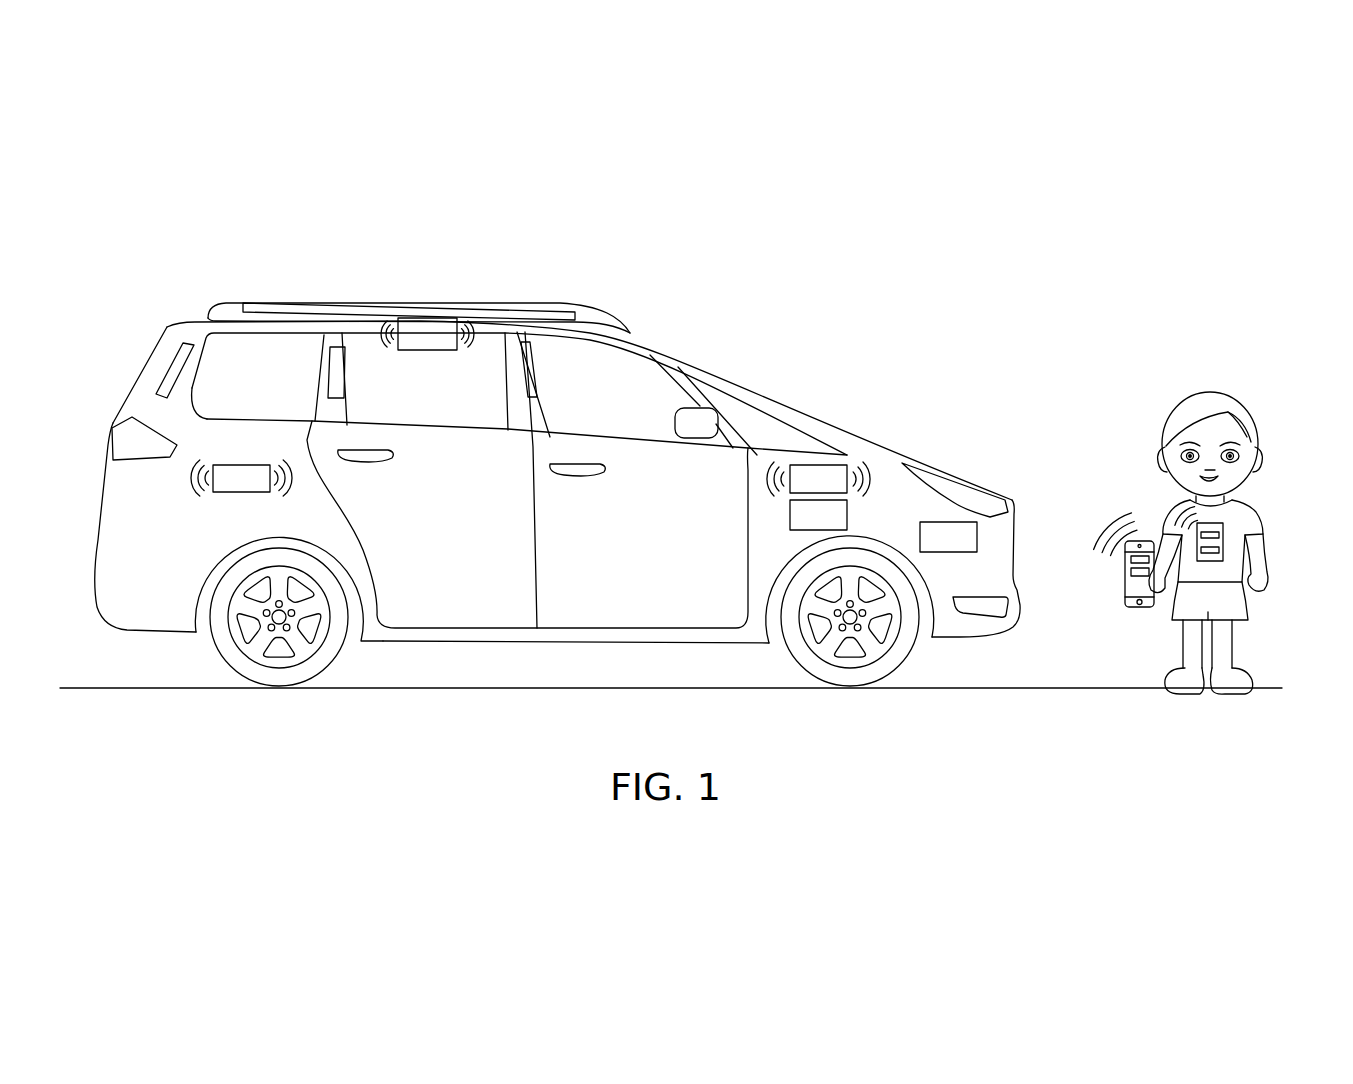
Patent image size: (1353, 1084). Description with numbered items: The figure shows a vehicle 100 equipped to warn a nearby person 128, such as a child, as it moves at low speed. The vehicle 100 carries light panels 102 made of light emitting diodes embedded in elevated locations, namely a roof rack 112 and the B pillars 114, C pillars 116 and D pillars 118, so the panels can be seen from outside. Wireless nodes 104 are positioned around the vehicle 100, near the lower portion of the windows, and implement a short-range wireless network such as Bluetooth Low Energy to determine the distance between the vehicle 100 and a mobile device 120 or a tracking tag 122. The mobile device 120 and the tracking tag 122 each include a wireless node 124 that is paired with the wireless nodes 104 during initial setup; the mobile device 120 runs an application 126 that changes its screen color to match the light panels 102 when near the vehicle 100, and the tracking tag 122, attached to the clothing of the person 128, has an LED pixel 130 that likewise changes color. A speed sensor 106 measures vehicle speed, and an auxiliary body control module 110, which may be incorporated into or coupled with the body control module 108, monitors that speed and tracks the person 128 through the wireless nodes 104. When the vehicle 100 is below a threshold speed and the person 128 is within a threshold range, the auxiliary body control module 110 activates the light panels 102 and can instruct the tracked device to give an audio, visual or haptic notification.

The vehicle 100 is at (918, 454).
The light panels 102 is at (517, 303).
The wireless nodes 104 is at (243, 493).
The speed sensor 106 is at (790, 513).
The body control module 108 is at (1013, 531).
The auxiliary body control module 110 is at (425, 318).
The roof rack 112 is at (617, 322).
The B pillars 114 is at (552, 388).
The C pillars 116 is at (358, 387).
The D pillars 118 is at (195, 378).
The mobile device 120 is at (1137, 608).
The tracking tag 122 is at (1223, 534).
The wireless node 124 is at (1126, 572).
The application 126 is at (1126, 557).
The person 128 is at (1211, 392).
The LED pixel 130 is at (1233, 515).